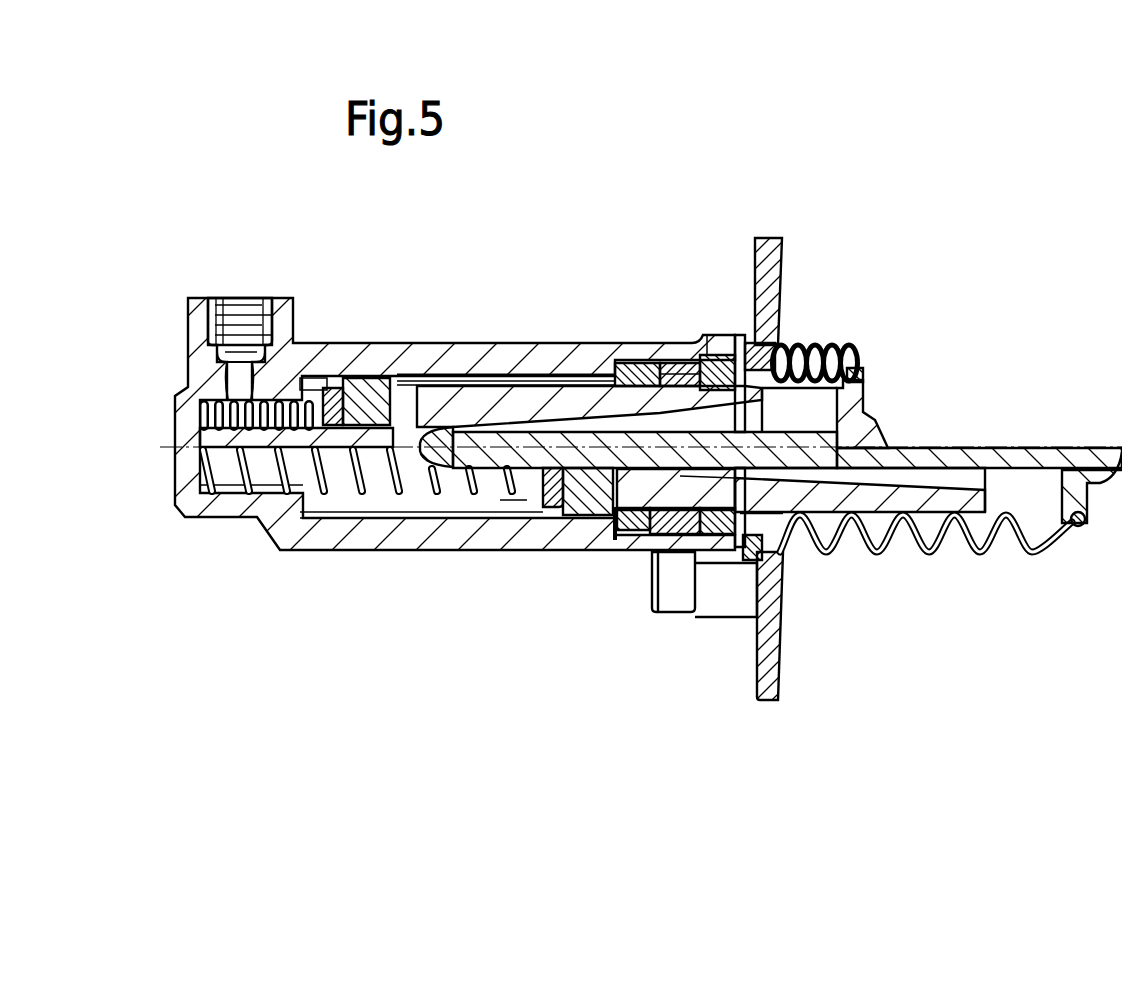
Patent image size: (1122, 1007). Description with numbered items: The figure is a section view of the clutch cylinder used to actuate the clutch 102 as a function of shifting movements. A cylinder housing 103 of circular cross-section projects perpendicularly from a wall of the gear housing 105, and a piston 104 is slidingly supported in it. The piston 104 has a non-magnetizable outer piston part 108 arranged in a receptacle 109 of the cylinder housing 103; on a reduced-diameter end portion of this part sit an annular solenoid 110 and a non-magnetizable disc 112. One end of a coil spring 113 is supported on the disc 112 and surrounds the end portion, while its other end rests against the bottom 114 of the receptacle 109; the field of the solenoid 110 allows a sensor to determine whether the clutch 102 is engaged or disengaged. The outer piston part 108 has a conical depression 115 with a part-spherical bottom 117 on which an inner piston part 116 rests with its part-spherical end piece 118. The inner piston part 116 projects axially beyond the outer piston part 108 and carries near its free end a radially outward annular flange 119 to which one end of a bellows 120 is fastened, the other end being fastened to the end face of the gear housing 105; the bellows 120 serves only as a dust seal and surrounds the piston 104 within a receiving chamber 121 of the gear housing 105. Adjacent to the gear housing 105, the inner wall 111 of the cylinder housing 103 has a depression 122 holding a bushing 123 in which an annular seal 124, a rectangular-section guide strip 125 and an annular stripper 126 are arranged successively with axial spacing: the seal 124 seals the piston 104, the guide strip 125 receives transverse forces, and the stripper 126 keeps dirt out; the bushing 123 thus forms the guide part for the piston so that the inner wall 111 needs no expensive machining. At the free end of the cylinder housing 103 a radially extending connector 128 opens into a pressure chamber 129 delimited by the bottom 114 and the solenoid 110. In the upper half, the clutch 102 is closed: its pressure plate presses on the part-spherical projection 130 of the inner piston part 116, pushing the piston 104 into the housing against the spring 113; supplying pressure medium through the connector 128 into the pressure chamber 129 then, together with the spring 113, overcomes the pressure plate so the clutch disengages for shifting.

The clutch 102 is at (560, 248).
The cylinder housing 103 is at (376, 343).
The piston 104 is at (853, 360).
The gear housing 105 is at (766, 245).
The outer piston part 108 is at (445, 412).
The receptacle 109 is at (323, 507).
The annular solenoid 110 is at (358, 377).
The inner wall 111 is at (478, 388).
The disc 112 is at (328, 384).
The coil spring 113 is at (262, 370).
The bottom 114 is at (208, 495).
The conical depression 115 is at (736, 335).
The inner piston part 116 is at (805, 470).
The part-spherical bottom 117 is at (428, 420).
The part-spherical end piece 118 is at (432, 437).
The annular flange 119 is at (1070, 498).
The bellows 120 is at (918, 515).
The receiving chamber 121 is at (779, 392).
The depression 122 is at (652, 362).
The bushing 123 is at (650, 540).
The annular seal 124 is at (613, 350).
The guide strip 125 is at (652, 353).
The annular stripper 126 is at (707, 355).
The connector 128 is at (199, 318).
The pressure chamber 129 is at (262, 475).
The part-spherical projection 130 is at (880, 432).